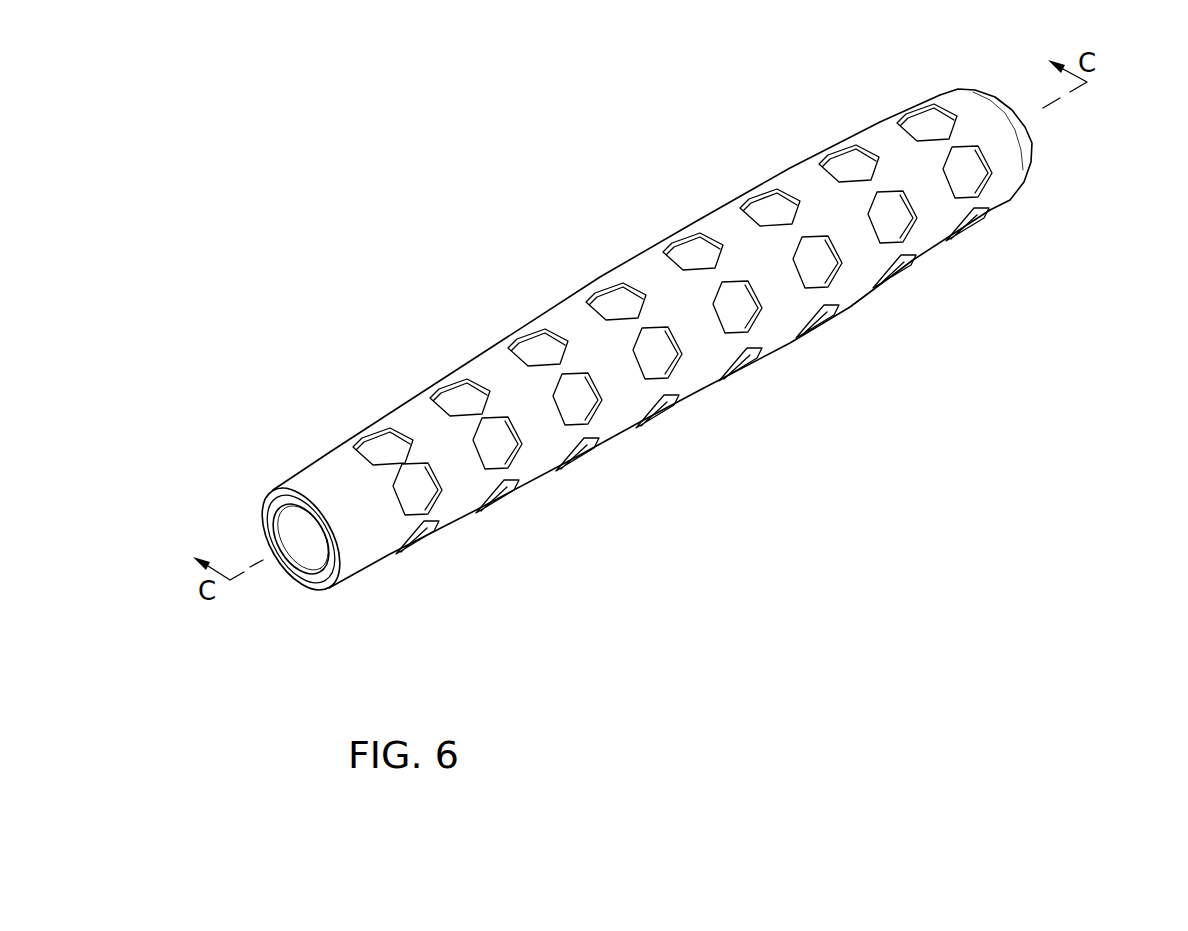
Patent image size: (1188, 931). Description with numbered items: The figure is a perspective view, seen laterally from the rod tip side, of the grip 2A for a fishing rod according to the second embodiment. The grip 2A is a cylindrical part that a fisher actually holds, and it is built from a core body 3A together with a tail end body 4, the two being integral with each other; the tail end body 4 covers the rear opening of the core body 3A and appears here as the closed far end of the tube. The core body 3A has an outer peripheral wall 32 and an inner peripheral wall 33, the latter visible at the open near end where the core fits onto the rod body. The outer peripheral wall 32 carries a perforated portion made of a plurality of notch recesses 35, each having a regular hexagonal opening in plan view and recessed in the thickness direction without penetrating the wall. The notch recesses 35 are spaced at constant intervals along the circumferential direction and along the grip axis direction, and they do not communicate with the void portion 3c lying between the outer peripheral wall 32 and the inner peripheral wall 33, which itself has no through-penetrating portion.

The grip 2A is at (612, 161).
The core body 3A is at (573, 293).
The outer peripheral wall 32 is at (732, 202).
The tail end body 4 is at (1032, 137).
The inner peripheral wall 33 is at (313, 540).
The notch recess 35 is at (527, 340).
The void portion 3c is at (780, 293).